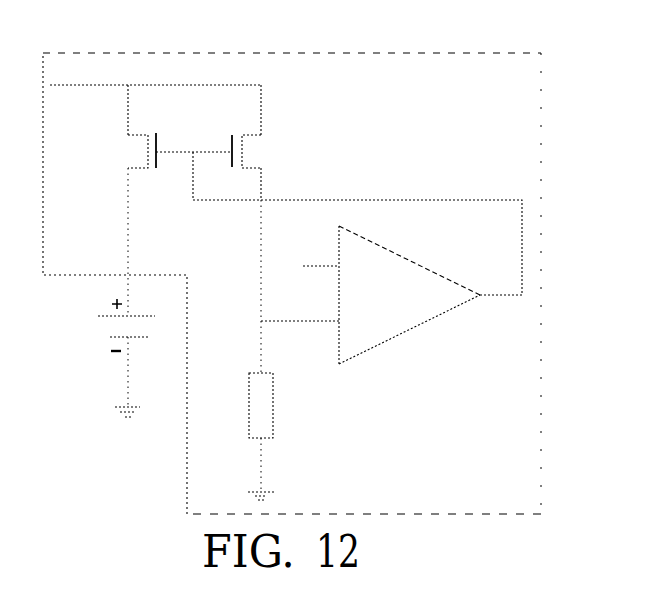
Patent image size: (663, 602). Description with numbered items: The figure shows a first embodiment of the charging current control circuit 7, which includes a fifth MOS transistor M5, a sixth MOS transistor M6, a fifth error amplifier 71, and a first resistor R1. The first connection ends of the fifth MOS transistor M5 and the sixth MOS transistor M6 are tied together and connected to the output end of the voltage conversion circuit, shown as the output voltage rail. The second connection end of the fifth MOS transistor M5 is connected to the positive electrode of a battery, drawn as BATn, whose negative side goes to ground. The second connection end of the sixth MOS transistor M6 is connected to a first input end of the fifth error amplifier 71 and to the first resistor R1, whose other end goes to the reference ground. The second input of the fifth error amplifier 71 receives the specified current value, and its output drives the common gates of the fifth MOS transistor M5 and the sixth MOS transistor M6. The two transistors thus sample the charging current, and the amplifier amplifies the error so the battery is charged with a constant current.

The charging current control circuit 7 is at (292, 257).
The fifth error amplifier 71 is at (410, 270).
The fifth MOS transistor M5 is at (154, 200).
The sixth MOS transistor M6 is at (357, 229).
The first resistor R1 is at (241, 436).
The battery BATn is at (161, 358).